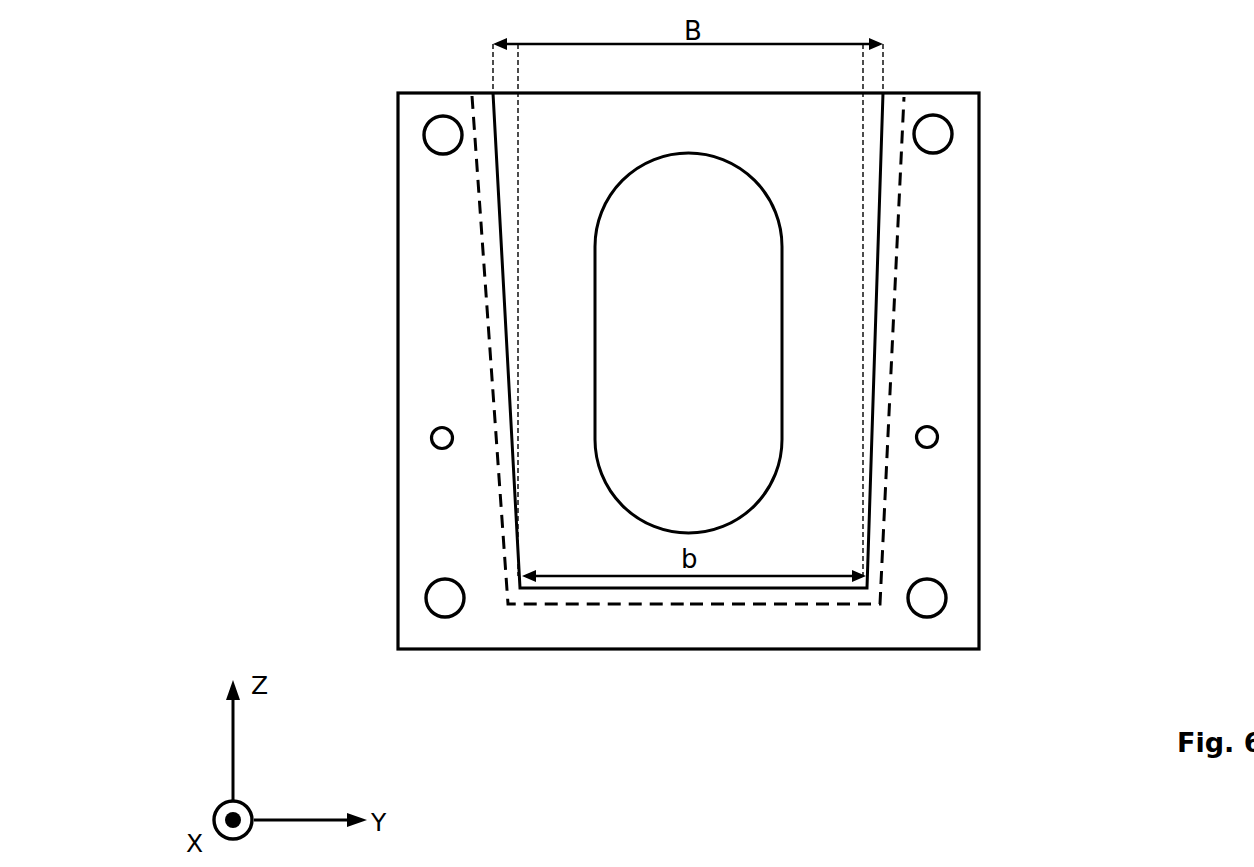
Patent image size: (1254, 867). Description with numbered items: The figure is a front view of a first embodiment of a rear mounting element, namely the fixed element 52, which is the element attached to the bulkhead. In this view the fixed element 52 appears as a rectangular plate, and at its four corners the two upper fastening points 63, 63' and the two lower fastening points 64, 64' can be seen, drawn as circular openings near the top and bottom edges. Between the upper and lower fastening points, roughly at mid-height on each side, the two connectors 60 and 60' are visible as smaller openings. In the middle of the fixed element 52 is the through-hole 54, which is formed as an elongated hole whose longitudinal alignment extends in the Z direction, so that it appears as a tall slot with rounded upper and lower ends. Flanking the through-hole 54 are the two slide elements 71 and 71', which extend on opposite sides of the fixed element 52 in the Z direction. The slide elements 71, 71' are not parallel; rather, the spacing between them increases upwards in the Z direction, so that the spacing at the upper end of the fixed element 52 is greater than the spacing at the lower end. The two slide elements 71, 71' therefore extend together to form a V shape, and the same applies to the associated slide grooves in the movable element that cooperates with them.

The fixed element 52 is at (952, 286).
The through-hole 54 is at (627, 193).
The connector 60 is at (368, 419).
The connector 60' is at (1002, 460).
The upper fastening point 63 is at (372, 119).
The upper fastening point 63' is at (1019, 114).
The lower fastening point 64 is at (378, 581).
The lower fastening point 64' is at (1012, 621).
The slide element 71 is at (486, 350).
The slide element 71' is at (896, 350).